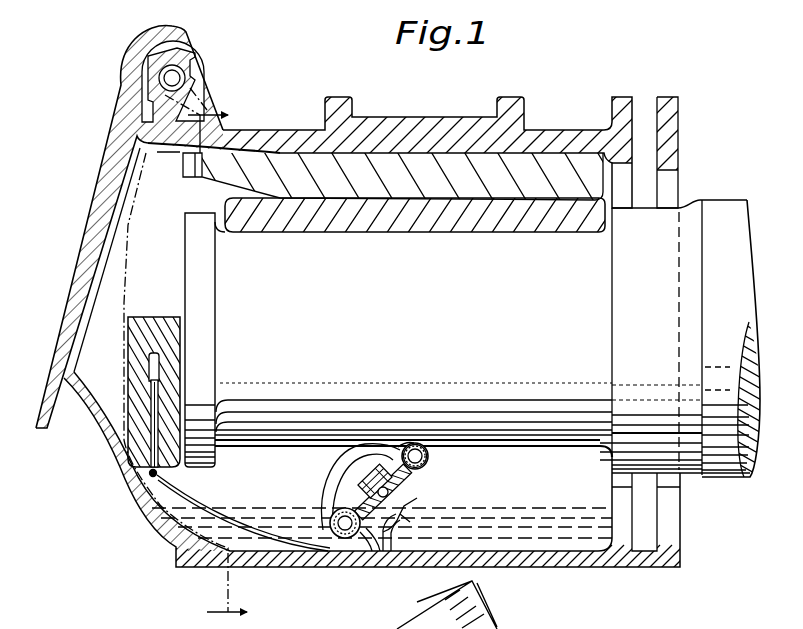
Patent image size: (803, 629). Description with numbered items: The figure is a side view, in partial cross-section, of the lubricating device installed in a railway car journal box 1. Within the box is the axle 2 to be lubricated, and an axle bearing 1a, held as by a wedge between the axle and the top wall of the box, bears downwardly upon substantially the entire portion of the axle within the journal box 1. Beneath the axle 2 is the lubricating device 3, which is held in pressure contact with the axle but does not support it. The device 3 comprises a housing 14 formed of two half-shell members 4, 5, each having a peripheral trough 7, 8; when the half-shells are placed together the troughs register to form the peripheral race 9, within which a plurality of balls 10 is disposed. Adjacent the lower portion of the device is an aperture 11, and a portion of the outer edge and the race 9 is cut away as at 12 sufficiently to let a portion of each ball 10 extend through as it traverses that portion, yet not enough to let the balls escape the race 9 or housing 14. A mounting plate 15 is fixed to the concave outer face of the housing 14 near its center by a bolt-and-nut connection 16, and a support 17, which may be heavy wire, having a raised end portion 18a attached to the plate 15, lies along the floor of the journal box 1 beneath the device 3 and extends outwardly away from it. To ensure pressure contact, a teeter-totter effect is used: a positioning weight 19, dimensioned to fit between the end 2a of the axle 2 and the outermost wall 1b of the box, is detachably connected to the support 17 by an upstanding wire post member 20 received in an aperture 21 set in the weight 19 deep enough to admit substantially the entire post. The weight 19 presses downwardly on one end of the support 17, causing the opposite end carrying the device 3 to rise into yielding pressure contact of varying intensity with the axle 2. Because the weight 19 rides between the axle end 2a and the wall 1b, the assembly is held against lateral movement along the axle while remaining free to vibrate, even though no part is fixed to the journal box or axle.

The journal box 1 is at (417, 127).
The axle bearing 1a is at (351, 232).
The outermost wall 1b is at (103, 463).
The axle 2 is at (548, 420).
The end of the axle 2a is at (197, 259).
The lubricating device 3 is at (424, 488).
The half-shell member 4 is at (360, 496).
The half-shell member 5 is at (412, 474).
The peripheral trough 7 is at (337, 512).
The peripheral trough 8 is at (428, 462).
The peripheral race 9 is at (402, 444).
The balls 10 is at (414, 443).
The aperture 11 is at (346, 539).
The cut-away portion 12 is at (427, 443).
The housing 14 is at (330, 467).
The mounting plate 15 is at (392, 522).
The bolt-and-nut connection 16 is at (403, 517).
The support 17 is at (211, 508).
The raised end portion 18a is at (385, 551).
The positioning weight 19 is at (153, 317).
The wire post member 20 is at (151, 423).
The aperture 21 is at (149, 366).